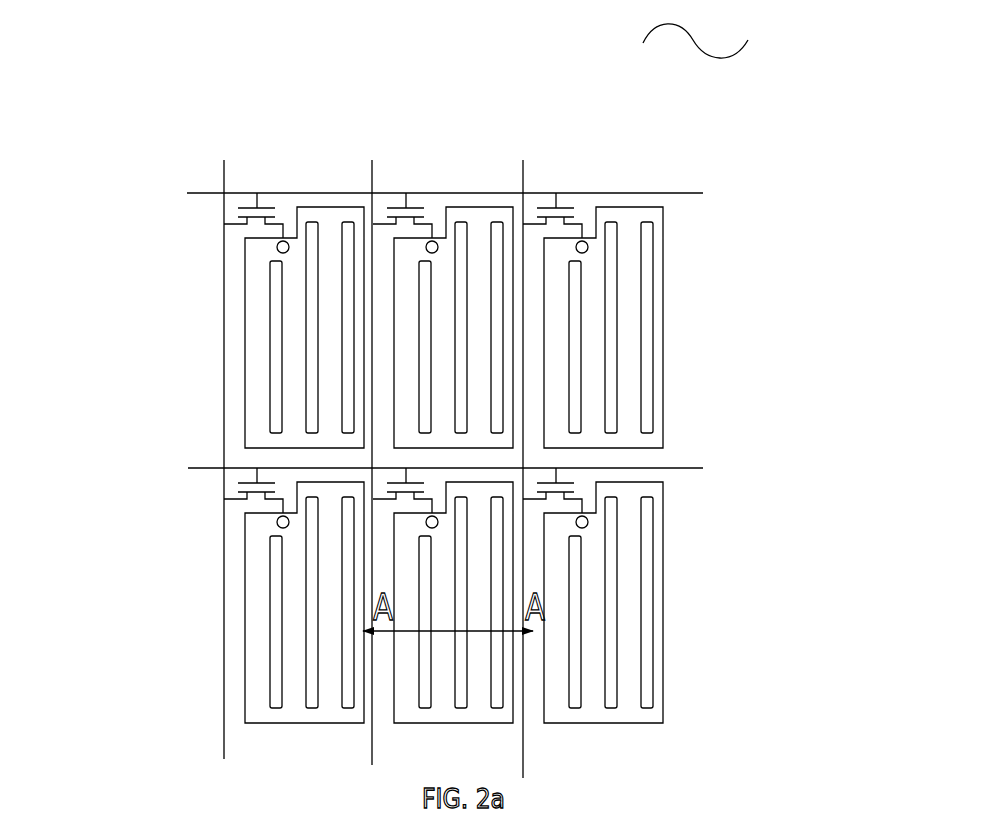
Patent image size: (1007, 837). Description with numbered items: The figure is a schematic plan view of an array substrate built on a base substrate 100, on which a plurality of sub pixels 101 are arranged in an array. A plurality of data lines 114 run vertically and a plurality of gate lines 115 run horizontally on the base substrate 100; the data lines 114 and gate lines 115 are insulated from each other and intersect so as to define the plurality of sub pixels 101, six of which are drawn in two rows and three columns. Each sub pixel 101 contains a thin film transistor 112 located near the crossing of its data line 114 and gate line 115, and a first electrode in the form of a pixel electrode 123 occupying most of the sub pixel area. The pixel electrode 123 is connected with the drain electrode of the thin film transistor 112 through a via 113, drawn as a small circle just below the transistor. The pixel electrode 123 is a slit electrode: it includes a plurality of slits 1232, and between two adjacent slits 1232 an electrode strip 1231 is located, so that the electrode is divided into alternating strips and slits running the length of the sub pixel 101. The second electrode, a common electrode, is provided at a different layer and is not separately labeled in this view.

The base substrate 100 is at (737, 42).
The sub pixel 101 is at (357, 193).
The thin film transistor 112 is at (243, 193).
The via 113 is at (277, 248).
The data line 114 is at (523, 183).
The gate line 115 is at (215, 465).
The pixel electrode 123 is at (655, 215).
The electrode strip 1231 is at (627, 269).
The slit 1232 is at (643, 322).